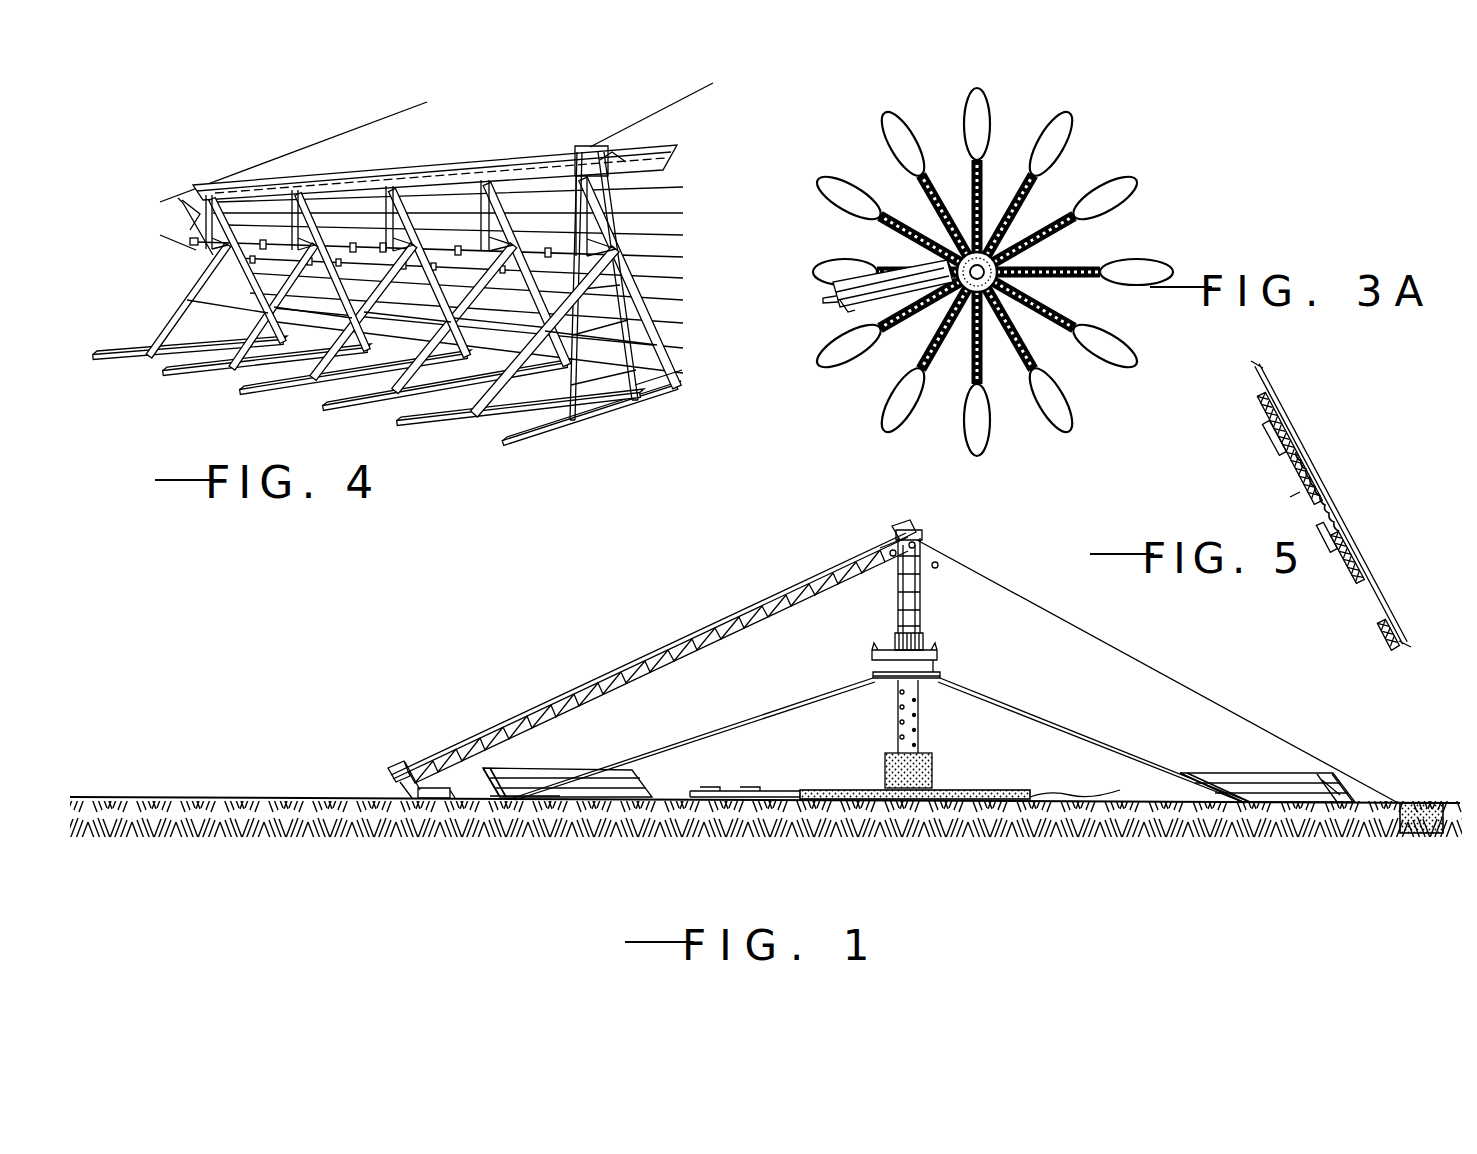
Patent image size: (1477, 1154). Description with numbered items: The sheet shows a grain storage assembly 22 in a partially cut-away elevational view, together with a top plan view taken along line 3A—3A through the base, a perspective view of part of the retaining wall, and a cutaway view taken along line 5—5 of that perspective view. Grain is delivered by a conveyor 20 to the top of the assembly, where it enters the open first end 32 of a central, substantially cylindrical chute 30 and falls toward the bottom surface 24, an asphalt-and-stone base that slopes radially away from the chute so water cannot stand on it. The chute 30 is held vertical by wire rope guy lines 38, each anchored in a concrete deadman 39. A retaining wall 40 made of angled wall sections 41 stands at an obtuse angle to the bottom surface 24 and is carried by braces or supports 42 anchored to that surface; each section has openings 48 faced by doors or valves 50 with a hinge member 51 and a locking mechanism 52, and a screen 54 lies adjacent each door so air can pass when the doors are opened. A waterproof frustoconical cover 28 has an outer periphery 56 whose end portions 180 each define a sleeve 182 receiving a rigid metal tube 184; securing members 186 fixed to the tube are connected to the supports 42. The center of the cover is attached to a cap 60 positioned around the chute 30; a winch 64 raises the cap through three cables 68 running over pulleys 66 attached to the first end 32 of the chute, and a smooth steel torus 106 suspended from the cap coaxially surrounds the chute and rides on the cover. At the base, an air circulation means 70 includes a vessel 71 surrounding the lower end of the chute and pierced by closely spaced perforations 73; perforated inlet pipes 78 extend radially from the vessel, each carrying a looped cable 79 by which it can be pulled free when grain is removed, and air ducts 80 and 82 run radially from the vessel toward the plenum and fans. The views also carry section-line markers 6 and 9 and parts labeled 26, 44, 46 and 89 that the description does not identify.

In FIG. 1, the conveyor 20 is at (600, 673).
In FIG. 1, the storage assembly 22 is at (1098, 718).
In FIG. 1, the bottom surface 24 is at (642, 822).
In FIG. 4, the support frame 26 is at (218, 272).
In FIG. 4, the cover 28 is at (243, 162).
In FIG. 1, the cover 28 is at (1022, 722).
In FIG. 3A, the chute 30 is at (1028, 280).
In FIG. 1, the chute 30 is at (947, 573).
In FIG. 1, the first, open end 32 is at (915, 542).
In FIG. 1, the guy lines 38 is at (1238, 710).
In FIG. 1, the concrete deadman 39 is at (1421, 800).
In FIG. 4, the retaining wall 40 is at (367, 186).
In FIG. 1, the retaining wall 40 is at (566, 764).
In FIG. 1, the wall sections 41 is at (600, 770).
In FIG. 4, the braces or supports 42 is at (165, 318).
In FIG. 1, the braces or supports 42 is at (1343, 790).
In FIG. 5, the hatched bar 44 is at (1382, 631).
In FIG. 5, the beam 46 is at (1273, 384).
In FIG. 5, the openings 48 is at (1272, 464).
In FIG. 1, the openings 48 is at (513, 774).
In FIG. 5, the doors or valves 50 is at (1290, 498).
In FIG. 5, the hinge member 51 is at (1329, 547).
In FIG. 5, the locking mechanism 52 is at (1264, 421).
In FIG. 5, the screen 54 is at (1312, 470).
In FIG. 1, the outer periphery 56 is at (508, 800).
In FIG. 1, the cap 60 is at (866, 667).
In FIG. 1, the winch 64 is at (860, 560).
In FIG. 1, the pulleys 66 is at (918, 545).
In FIG. 1, the cables 68 is at (889, 550).
In FIG. 1, the air circulation means 70 is at (723, 778).
In FIG. 3A, the vessel 71 is at (1030, 258).
In FIG. 1, the vessel 71 is at (929, 756).
In FIG. 1, the apertures or perforations 73 is at (893, 750).
In FIG. 3A, the inlet pipes 78 is at (1043, 224).
In FIG. 1, the inlet pipes 78 is at (982, 772).
In FIG. 3A, the cable 79 is at (1078, 128).
In FIG. 1, the cable 79 is at (1108, 790).
In FIG. 3A, the air duct 80 is at (887, 278).
In FIG. 3A, the air duct 82 is at (843, 308).
In FIG. 3A, the tube 89 is at (822, 298).
In FIG. 1, the ring member or torus 106 is at (943, 676).
In FIG. 4, the end portions 180 is at (545, 150).
In FIG. 4, the sleeve 182 is at (338, 185).
In FIG. 4, the rigid member 184 is at (655, 122).
In FIG. 4, the securing members 186 is at (490, 195).
In FIG. 4, the line 5— 5 is at (470, 213).
In FIG. 1, the section line 6 is at (832, 620).
In FIG. 1, the section line 9 is at (878, 572).
In FIG. 1, the line 3A— 3A is at (740, 737).